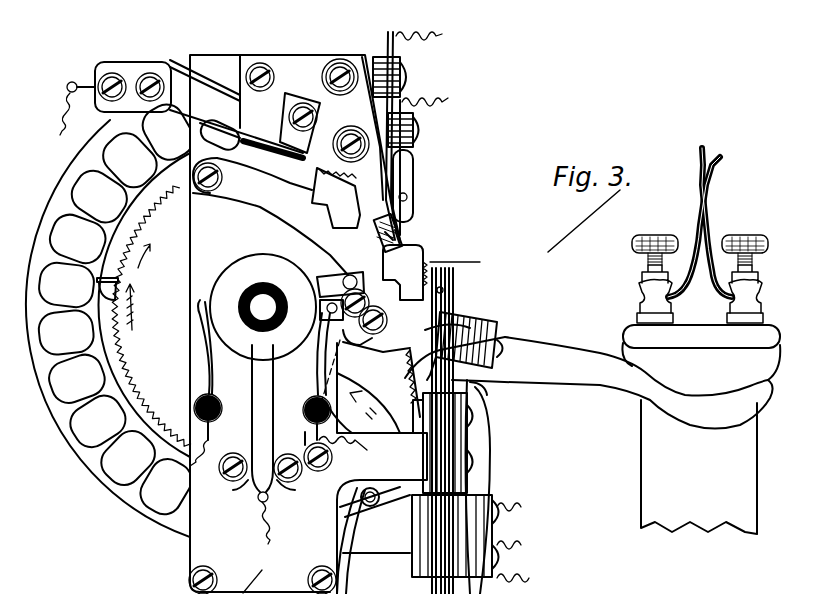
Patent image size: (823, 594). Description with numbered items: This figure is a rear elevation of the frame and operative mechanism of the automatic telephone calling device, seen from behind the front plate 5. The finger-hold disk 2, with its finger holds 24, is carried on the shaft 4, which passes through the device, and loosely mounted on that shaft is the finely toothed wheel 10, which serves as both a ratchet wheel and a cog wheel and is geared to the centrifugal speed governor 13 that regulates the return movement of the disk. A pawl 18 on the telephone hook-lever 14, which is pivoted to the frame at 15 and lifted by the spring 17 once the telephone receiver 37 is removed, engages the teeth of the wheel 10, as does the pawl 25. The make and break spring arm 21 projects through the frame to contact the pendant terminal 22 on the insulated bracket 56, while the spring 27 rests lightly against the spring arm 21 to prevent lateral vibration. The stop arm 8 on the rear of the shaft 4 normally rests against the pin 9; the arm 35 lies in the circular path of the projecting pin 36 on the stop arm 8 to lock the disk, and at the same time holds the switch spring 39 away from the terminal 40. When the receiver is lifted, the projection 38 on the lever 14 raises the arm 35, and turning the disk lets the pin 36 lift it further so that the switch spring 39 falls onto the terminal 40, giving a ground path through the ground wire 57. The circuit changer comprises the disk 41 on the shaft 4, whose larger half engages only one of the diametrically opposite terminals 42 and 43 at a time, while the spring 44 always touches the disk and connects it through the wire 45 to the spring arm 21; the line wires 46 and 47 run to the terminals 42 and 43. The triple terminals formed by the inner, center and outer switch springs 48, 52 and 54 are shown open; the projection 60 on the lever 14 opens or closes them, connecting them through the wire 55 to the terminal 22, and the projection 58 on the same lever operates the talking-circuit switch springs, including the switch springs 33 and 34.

The finger-hold disk 2 is at (110, 480).
The shaft 4 is at (258, 305).
The front plate 5 is at (208, 62).
The stop arm 8 is at (333, 287).
The pin 9 is at (362, 325).
The wheel 10 is at (151, 316).
The centrifugal speed governor 13 is at (360, 523).
The telephone hook-lever 14 is at (563, 370).
The pivot 15 is at (327, 373).
The spring 17 is at (340, 583).
The pawl 18 is at (110, 290).
The spring arm 21 is at (197, 97).
The pendant terminal 22 is at (403, 230).
The finger holds 24 is at (66, 333).
The pawl 25 is at (427, 257).
The spring 27 is at (220, 83).
The switch spring 33 is at (467, 440).
The switch spring 34 is at (473, 480).
The arm 35 is at (243, 187).
The projecting pin 36 is at (455, 263).
The telephone receiver 37 is at (701, 341).
The projection 38 is at (383, 237).
The switch spring 39 is at (387, 173).
The terminal 40 is at (393, 163).
The disk 41 is at (243, 340).
The spring terminal 42 is at (203, 343).
The spring terminal 43 is at (294, 438).
The spring 44 is at (258, 403).
The wire 45 is at (62, 128).
The line wire 46 is at (182, 468).
The line wire 47 is at (560, 508).
The inner switch spring 48 is at (420, 340).
The center switch spring 52 is at (440, 320).
The outer switch spring 54 is at (500, 321).
The wire 55 is at (520, 500).
The bracket 56 is at (370, 77).
The ground wire 57 is at (432, 126).
The projection 58 is at (483, 378).
The projection 60 is at (380, 311).